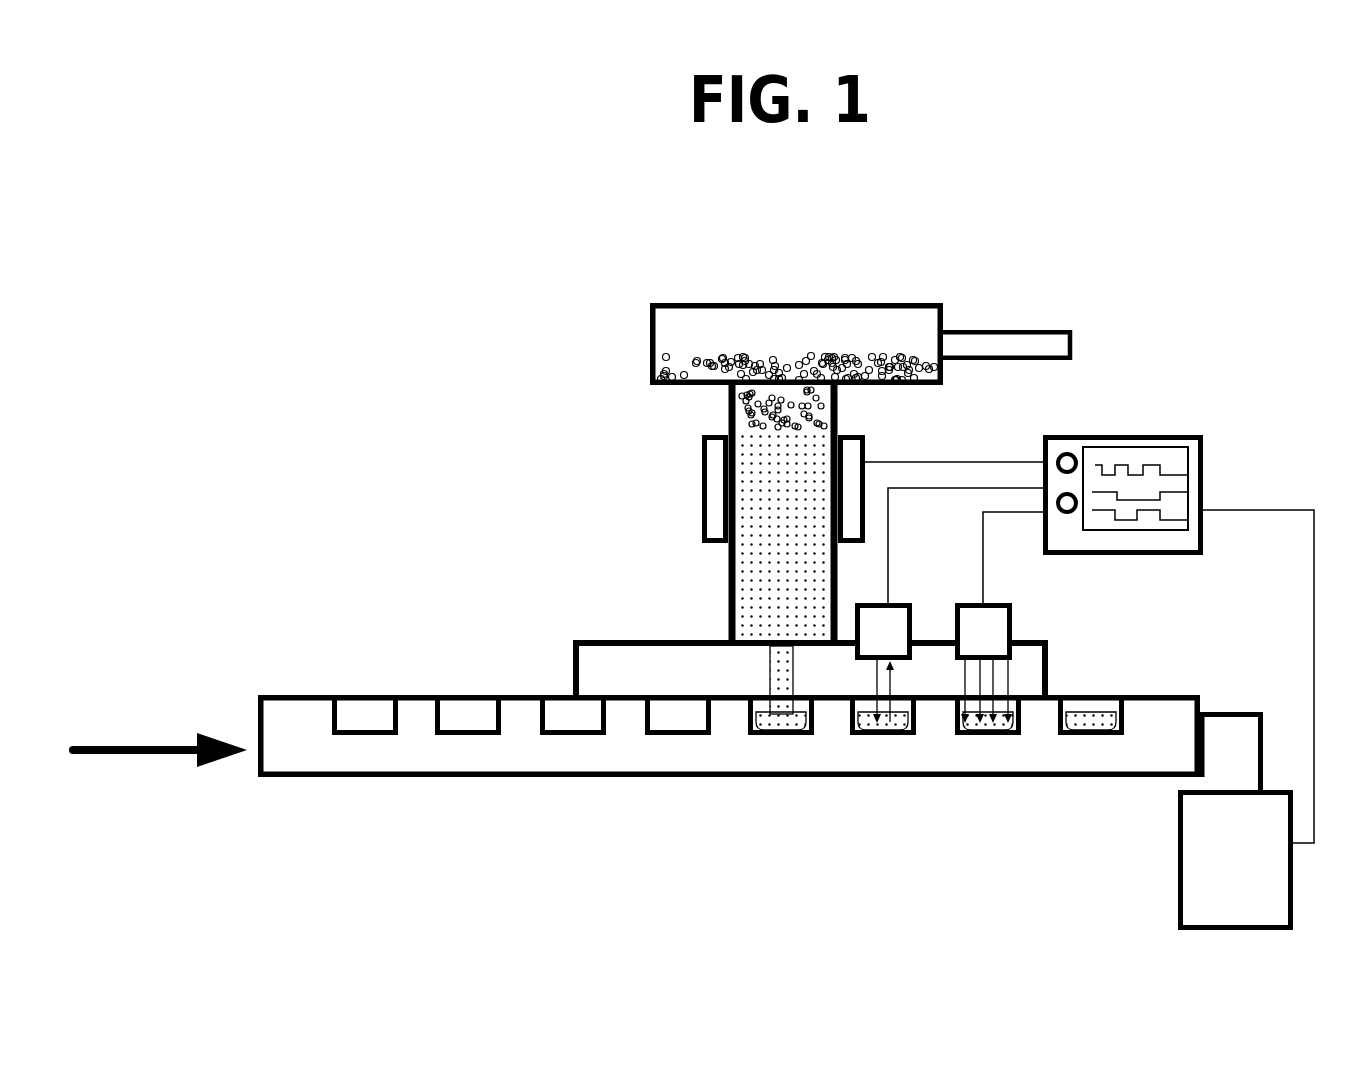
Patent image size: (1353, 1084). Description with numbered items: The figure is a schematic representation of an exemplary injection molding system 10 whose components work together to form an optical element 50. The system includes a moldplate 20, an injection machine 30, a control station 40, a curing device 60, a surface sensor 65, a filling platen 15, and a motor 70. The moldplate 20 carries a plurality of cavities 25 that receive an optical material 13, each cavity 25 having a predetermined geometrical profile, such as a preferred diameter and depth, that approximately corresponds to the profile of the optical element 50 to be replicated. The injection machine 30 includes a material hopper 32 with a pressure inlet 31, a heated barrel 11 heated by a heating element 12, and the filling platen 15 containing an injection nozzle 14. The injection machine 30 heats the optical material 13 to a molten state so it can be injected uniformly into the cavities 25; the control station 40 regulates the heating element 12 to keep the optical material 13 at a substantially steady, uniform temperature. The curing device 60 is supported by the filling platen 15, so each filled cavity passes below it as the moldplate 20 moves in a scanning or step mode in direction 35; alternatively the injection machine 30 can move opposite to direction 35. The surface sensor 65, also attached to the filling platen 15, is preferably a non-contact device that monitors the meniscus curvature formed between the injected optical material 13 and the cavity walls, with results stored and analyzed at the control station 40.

The injection molding system 10 is at (327, 267).
The heated barrel 11 is at (728, 421).
The heating element 12 is at (703, 523).
The optical material 13 is at (760, 587).
The injection nozzle 14 is at (763, 667).
The filling platen 15 is at (600, 653).
The moldplate 20 is at (278, 693).
The cavities 25 is at (918, 732).
The injection machine 30 is at (708, 288).
The pressure inlet 31 is at (1010, 328).
The material hopper 32 is at (813, 325).
The direction 35 is at (138, 745).
The control station 40 is at (1170, 435).
The optical element 50 is at (1068, 697).
The curing device 60 is at (1001, 617).
The surface sensor 65 is at (951, 605).
The motor 70 is at (1177, 865).